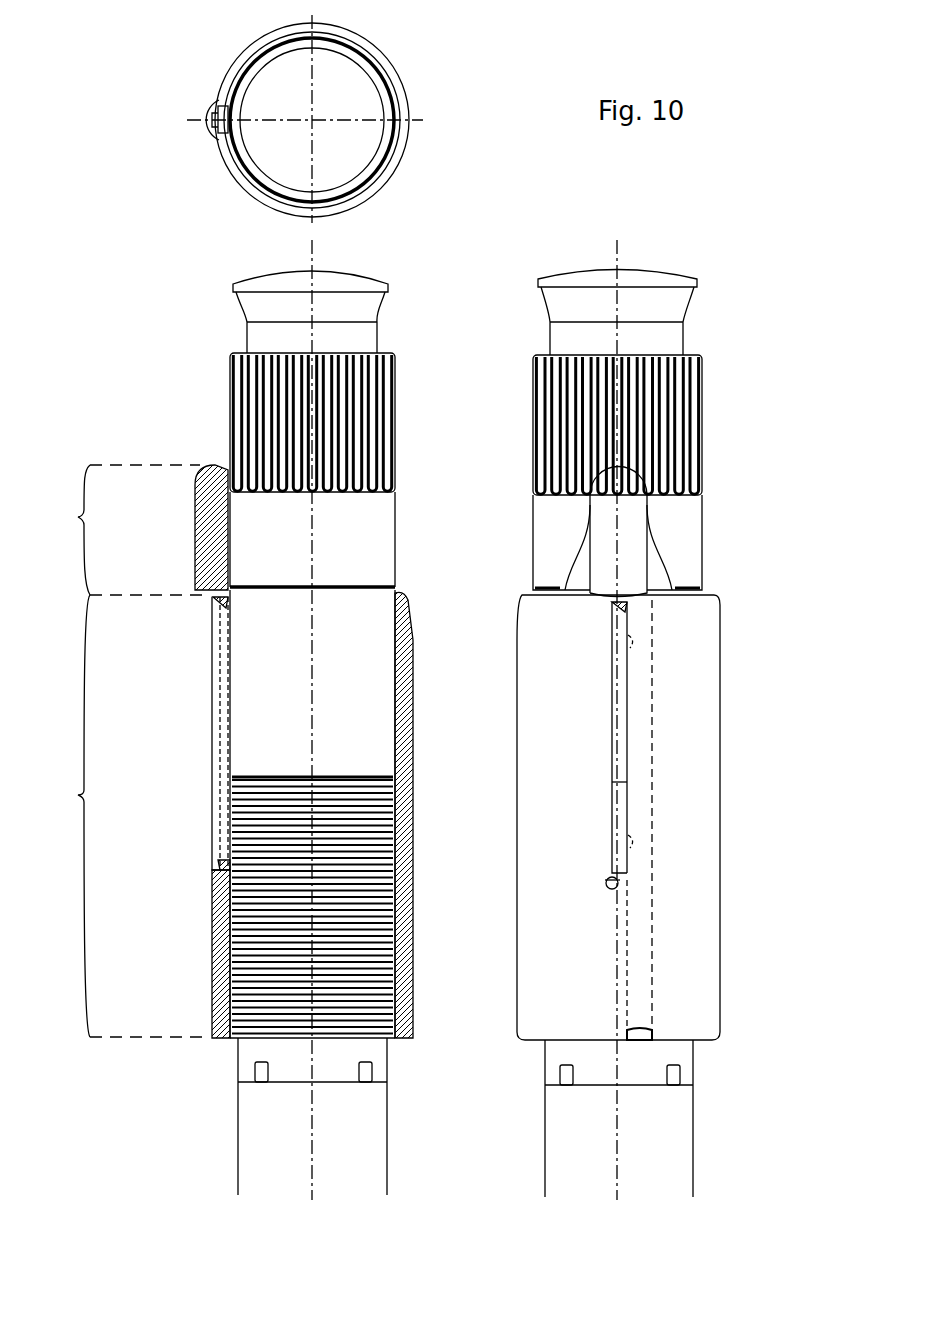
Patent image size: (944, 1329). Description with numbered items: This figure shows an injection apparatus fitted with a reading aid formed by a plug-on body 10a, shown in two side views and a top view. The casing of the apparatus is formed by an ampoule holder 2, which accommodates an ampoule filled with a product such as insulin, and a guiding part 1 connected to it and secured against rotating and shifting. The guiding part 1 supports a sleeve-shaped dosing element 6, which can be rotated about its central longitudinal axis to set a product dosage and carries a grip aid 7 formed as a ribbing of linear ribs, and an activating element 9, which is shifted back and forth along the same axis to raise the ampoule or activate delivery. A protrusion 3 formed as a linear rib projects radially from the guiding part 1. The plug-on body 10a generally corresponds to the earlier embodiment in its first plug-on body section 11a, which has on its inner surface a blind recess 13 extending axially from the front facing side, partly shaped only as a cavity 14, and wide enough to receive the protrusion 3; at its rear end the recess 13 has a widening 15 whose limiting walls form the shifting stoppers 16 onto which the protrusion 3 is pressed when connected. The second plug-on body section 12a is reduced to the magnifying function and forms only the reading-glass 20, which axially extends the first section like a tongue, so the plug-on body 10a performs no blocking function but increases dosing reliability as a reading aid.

The guiding part 1 is at (360, 703).
The ampoule holder 2 is at (365, 108).
The protrusion 3 is at (225, 703).
The dosing element 6 is at (550, 547).
The grip aid 7 is at (395, 373).
The activating element 9 is at (675, 300).
The plug-on body 10a is at (434, 630).
The first plug-on body section 11a is at (392, 70).
The second plug-on body section 12a is at (62, 518).
The recess 13 is at (652, 815).
The cavity 14 is at (640, 768).
The widening 15 is at (213, 772).
The shifting stopper 16 is at (220, 598).
The reading-glass 20 is at (212, 127).